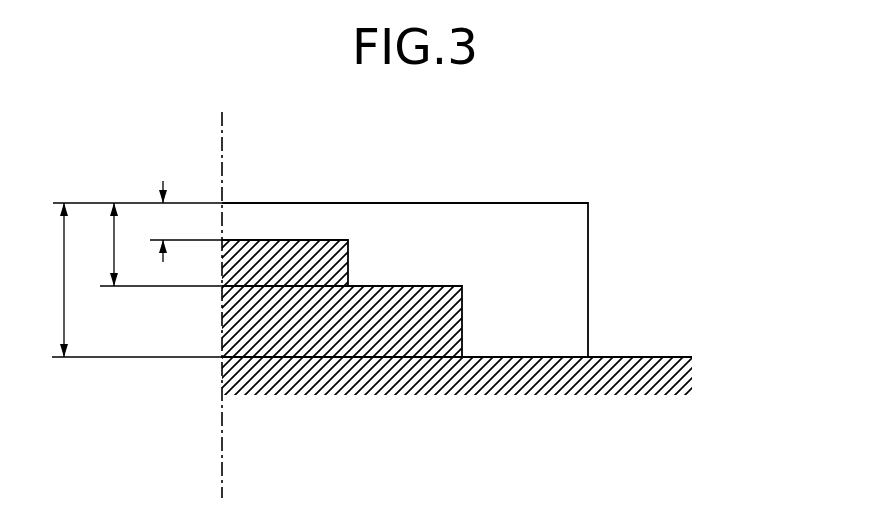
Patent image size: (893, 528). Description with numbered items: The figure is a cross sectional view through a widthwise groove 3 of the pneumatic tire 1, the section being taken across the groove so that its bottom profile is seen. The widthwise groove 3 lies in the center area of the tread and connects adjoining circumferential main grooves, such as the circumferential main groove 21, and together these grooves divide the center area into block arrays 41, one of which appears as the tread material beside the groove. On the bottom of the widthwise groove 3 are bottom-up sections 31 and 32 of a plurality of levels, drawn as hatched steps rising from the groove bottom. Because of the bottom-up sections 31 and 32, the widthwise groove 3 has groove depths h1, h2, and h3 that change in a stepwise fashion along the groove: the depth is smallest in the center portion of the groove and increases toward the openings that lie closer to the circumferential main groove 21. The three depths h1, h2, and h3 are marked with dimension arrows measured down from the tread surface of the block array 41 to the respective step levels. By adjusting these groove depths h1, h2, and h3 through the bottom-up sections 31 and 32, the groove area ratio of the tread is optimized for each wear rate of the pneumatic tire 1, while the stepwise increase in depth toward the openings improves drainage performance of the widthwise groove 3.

The pneumatic tire 1 is at (493, 285).
The widthwise groove 3 is at (412, 222).
The circumferential main groove 21 is at (493, 299).
The bottom-up section 31 is at (299, 238).
The bottom-up section 32 is at (413, 286).
The block array 41 is at (540, 204).
The groove depth h1 is at (179, 221).
The groove depth h2 is at (154, 244).
The groove depth h3 is at (129, 280).